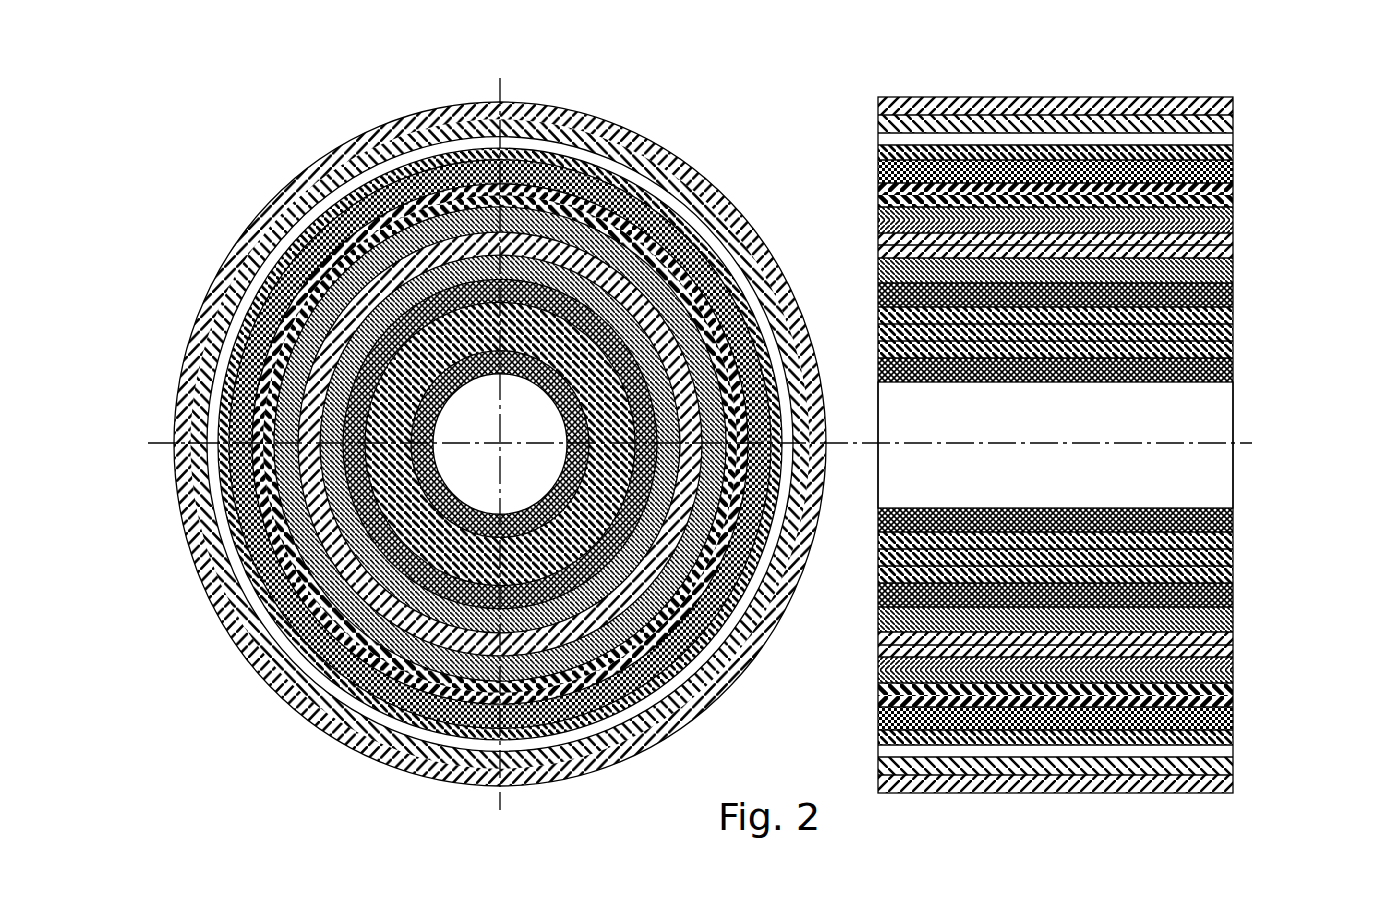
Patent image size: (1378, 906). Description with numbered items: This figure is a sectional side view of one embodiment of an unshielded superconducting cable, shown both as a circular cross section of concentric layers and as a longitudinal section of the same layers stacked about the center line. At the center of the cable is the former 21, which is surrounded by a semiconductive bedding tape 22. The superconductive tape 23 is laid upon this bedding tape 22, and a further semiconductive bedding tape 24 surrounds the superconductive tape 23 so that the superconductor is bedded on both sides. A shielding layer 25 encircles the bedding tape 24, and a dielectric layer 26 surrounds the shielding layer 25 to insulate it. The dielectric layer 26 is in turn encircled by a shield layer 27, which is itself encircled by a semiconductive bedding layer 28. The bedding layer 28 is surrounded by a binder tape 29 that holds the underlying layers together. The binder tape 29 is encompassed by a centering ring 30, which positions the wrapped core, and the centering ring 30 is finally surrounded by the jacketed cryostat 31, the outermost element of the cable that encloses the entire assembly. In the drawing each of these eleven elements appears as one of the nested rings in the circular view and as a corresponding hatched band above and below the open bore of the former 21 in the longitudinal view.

The former 21 is at (1236, 416).
The semiconductive bedding tape 22 is at (1236, 369).
The superconductive tape 23 is at (1236, 331).
The semiconductive bedding tape 24 is at (1236, 294).
The shielding layer 25 is at (1236, 271).
The dielectric layer 26 is at (1236, 246).
The shield layer 27 is at (1236, 219).
The semiconductive bedding layer 28 is at (1236, 196).
The binder tape 29 is at (1236, 173).
The centering ring 30 is at (1236, 140).
The jacketed cryostat 31 is at (1236, 104).